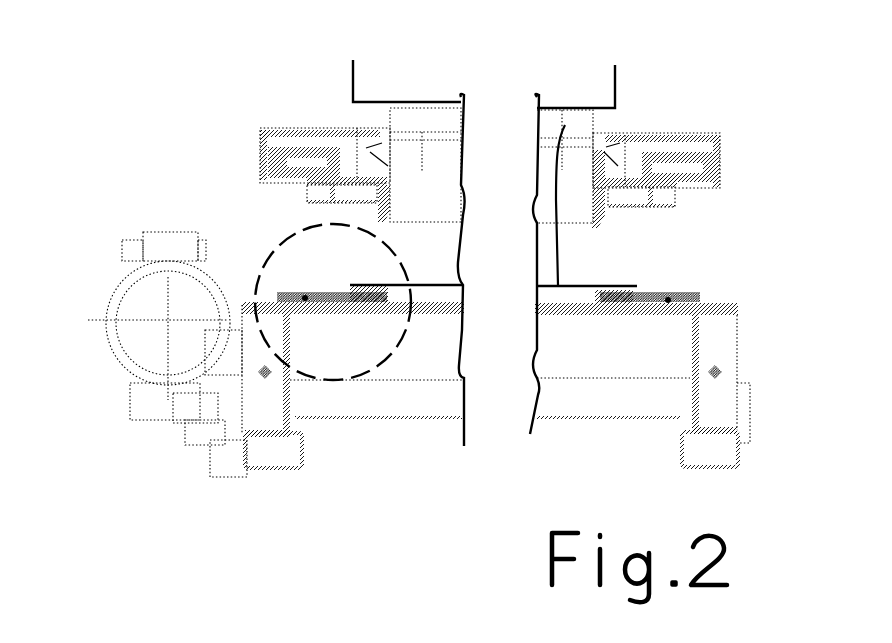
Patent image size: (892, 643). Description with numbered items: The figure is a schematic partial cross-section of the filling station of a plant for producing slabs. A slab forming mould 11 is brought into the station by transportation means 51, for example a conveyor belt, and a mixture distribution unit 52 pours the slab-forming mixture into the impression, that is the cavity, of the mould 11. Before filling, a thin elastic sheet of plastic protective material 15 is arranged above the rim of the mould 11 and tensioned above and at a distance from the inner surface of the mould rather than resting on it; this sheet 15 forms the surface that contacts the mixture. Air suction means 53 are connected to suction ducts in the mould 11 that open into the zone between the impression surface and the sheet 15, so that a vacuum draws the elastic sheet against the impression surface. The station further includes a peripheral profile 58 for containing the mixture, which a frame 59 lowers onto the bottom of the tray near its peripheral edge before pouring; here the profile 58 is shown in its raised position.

The mould 11 is at (627, 287).
The sheet of plastic protective material 15 is at (565, 125).
The transportation means 51 is at (326, 458).
The mixture distribution unit 52 is at (352, 76).
The air suction means 53 is at (302, 292).
The peripheral profile 58 is at (387, 221).
The frame 59 is at (257, 127).